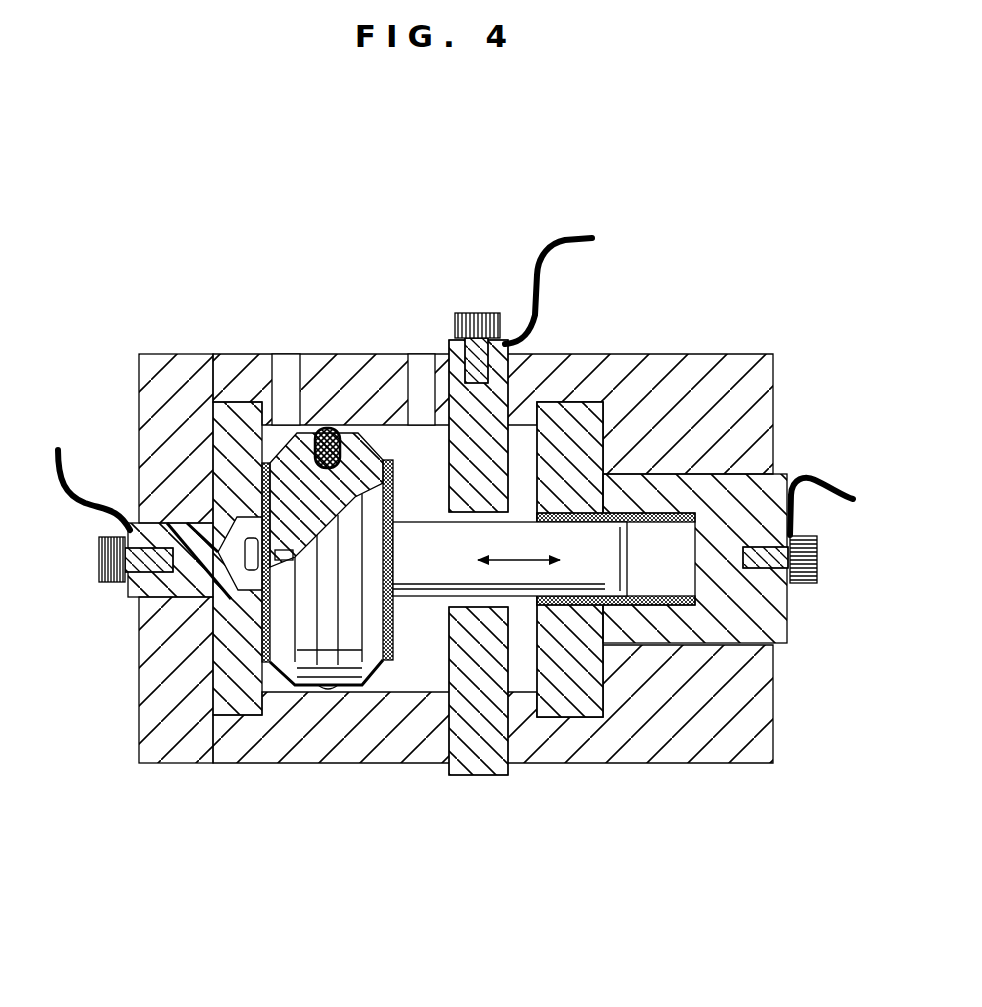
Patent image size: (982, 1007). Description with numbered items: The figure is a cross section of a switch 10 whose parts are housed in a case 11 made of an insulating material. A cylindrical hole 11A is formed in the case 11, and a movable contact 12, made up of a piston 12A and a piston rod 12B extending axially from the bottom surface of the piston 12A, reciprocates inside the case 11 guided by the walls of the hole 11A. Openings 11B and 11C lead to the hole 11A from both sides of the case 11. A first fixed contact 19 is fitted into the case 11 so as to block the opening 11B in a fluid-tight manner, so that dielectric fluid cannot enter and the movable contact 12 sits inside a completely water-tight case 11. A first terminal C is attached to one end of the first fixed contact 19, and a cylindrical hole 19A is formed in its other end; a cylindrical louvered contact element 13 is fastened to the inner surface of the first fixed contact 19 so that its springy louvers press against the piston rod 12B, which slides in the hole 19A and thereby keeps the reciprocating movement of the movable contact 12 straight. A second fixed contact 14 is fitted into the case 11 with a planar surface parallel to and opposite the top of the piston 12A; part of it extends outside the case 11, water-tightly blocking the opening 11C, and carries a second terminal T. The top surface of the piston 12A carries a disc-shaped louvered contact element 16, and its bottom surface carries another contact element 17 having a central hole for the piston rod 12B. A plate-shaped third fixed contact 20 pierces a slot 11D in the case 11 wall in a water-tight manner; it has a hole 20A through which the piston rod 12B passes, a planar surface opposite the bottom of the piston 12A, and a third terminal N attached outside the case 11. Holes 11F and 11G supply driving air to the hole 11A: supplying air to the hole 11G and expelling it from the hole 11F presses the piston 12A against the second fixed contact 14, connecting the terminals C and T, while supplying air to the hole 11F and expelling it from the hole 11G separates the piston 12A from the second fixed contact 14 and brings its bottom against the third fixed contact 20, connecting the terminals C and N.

The switch 10 is at (697, 246).
The case 11 is at (220, 367).
The cylindrical hole 11A is at (430, 667).
The opening 11B is at (778, 647).
The opening 11C is at (133, 601).
The slot 11D is at (445, 352).
The hole 11F is at (287, 363).
The hole 11G is at (423, 357).
The movable contact 12 is at (350, 637).
The piston 12A is at (300, 612).
The piston rod 12B is at (600, 558).
The contact element 13 is at (622, 605).
The second fixed contact 14 is at (195, 583).
The contact element 16 is at (318, 570).
The contact element 17 is at (397, 650).
The first fixed contact 19 is at (753, 497).
The cylindrical hole 19A is at (660, 565).
The third fixed contact 20 is at (497, 402).
The hole 20A is at (500, 590).
The second terminal T is at (115, 516).
The third terminal N is at (523, 310).
The first terminal C is at (798, 530).